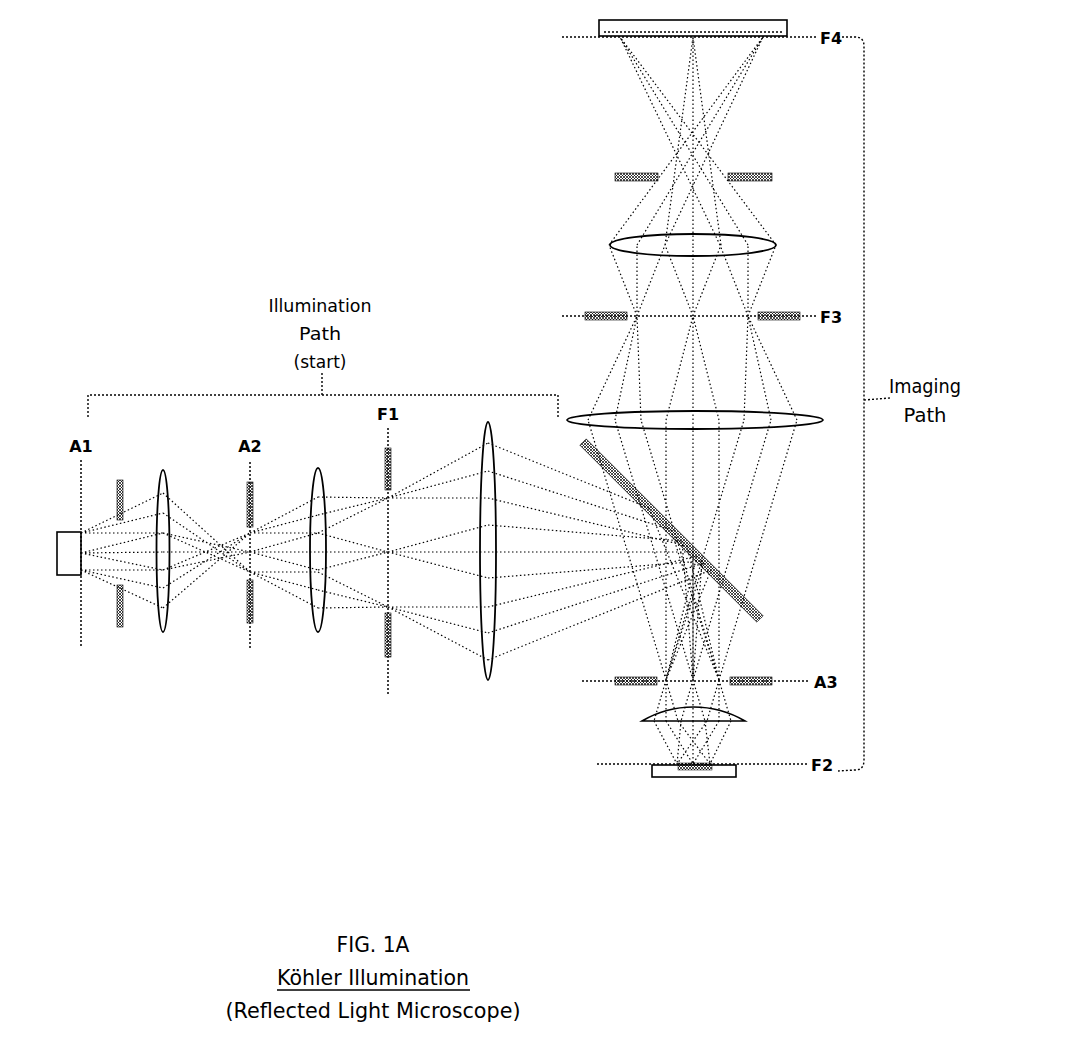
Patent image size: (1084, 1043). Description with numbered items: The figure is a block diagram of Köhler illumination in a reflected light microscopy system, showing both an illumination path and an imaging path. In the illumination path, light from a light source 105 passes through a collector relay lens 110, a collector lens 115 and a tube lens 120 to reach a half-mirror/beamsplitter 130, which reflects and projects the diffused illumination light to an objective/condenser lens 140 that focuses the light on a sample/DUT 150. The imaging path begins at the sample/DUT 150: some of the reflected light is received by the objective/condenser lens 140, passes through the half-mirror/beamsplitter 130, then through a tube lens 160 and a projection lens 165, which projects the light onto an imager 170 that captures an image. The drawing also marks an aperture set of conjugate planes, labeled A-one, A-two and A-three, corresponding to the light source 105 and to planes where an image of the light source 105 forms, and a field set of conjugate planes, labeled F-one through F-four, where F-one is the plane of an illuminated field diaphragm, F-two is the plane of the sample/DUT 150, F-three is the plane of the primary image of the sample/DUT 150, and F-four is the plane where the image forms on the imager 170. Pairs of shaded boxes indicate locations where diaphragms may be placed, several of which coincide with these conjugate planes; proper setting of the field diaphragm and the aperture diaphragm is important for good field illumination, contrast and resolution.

The light source 105 is at (75, 568).
The collector relay lens 110 is at (163, 632).
The collector lens 115 is at (318, 632).
The tube lens 120 is at (488, 680).
The half-mirror/beamsplitter 130 is at (760, 618).
The objective/condenser lens 140 is at (657, 720).
The sample/DUT 150 is at (707, 770).
The tube lens 160 is at (590, 413).
The projection lens 165 is at (632, 242).
The imager 170 is at (610, 23).